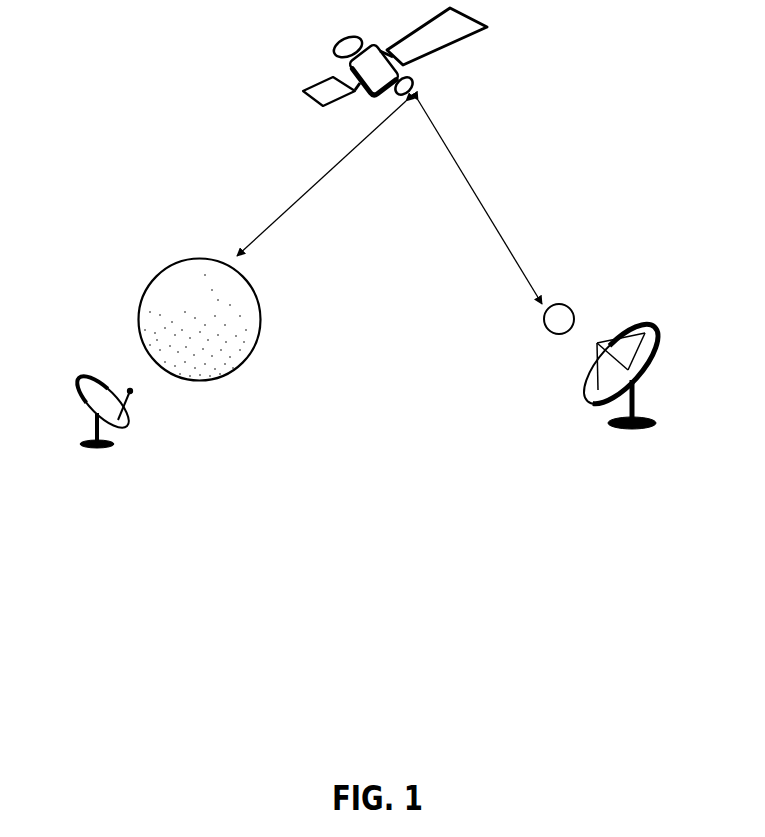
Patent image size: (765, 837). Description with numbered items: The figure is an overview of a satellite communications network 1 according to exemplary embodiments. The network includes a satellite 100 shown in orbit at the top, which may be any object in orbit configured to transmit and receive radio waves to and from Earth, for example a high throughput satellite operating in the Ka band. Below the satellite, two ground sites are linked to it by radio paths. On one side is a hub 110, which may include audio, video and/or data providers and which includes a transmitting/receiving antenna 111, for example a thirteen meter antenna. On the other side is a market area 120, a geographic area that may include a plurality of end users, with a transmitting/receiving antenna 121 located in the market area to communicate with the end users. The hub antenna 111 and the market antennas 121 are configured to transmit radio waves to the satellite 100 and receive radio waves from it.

The satellite communications network 1 is at (576, 45).
The satellite 100 is at (395, 57).
The hub 110 is at (540, 319).
The transmitting/receiving antenna 111 is at (628, 371).
The market area 120 is at (222, 320).
The transmitting/receiving antennas 121 is at (86, 408).